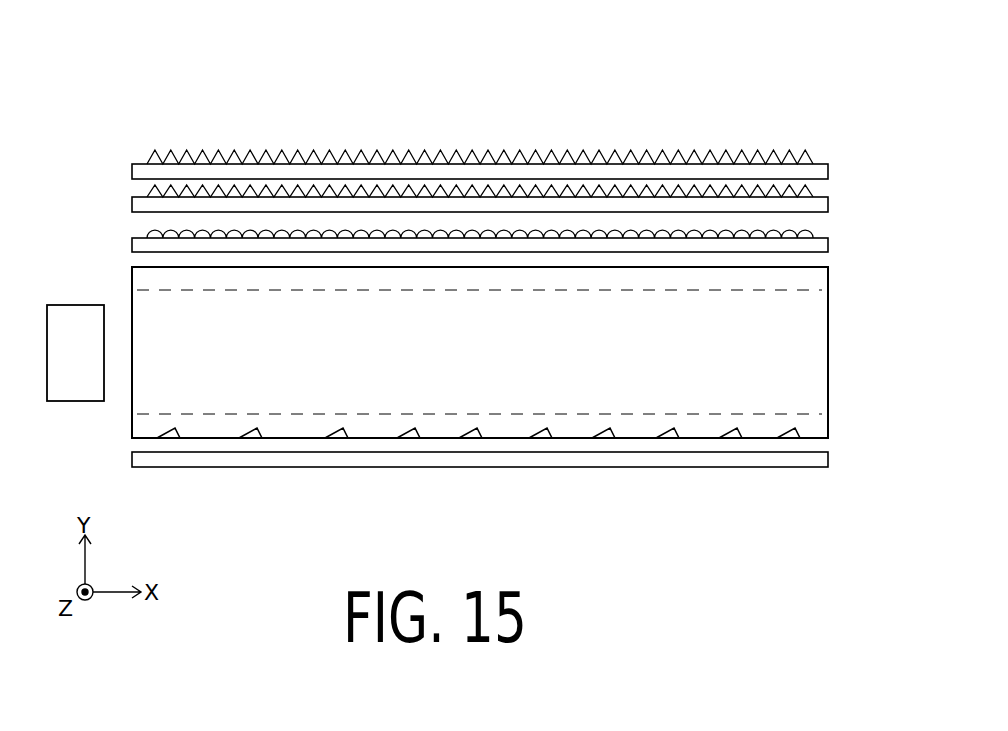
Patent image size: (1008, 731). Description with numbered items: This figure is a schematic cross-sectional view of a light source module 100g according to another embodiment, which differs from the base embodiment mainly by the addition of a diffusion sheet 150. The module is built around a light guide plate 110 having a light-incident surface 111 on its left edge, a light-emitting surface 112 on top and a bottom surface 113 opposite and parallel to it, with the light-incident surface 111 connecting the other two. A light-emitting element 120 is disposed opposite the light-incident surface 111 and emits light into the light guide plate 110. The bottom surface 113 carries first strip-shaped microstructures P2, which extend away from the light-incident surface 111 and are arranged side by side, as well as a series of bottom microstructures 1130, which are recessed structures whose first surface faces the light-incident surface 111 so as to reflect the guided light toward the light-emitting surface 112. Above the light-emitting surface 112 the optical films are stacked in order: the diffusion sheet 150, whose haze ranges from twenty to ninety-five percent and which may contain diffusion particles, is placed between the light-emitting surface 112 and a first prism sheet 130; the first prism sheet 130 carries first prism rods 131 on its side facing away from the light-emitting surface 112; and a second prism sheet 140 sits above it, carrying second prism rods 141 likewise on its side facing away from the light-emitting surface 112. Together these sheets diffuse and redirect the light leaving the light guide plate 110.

The light source module 100g is at (82, 36).
The light guide plate 110 is at (494, 323).
The light-incident surface 111 is at (122, 343).
The light-emitting surface 112 is at (697, 283).
The bottom surface 113 is at (766, 423).
The bottom microstructures 1130 is at (735, 437).
The light-emitting element 120 is at (75, 380).
The first prism sheet 130 is at (481, 198).
The first prism rods 131 is at (147, 193).
The second prism sheet 140 is at (510, 138).
The second prism rods 141 is at (150, 152).
The diffusion sheet 150 is at (818, 244).
The first strip-shaped microstructures P2 is at (818, 421).